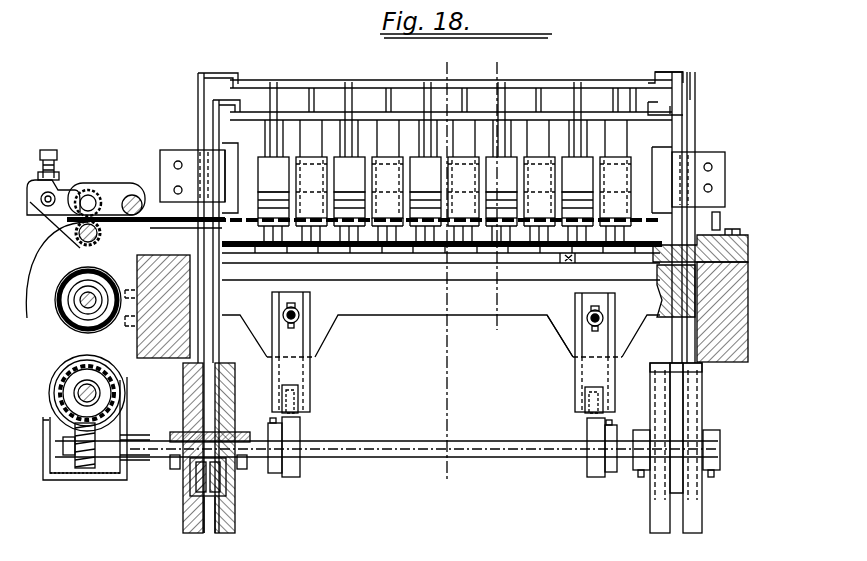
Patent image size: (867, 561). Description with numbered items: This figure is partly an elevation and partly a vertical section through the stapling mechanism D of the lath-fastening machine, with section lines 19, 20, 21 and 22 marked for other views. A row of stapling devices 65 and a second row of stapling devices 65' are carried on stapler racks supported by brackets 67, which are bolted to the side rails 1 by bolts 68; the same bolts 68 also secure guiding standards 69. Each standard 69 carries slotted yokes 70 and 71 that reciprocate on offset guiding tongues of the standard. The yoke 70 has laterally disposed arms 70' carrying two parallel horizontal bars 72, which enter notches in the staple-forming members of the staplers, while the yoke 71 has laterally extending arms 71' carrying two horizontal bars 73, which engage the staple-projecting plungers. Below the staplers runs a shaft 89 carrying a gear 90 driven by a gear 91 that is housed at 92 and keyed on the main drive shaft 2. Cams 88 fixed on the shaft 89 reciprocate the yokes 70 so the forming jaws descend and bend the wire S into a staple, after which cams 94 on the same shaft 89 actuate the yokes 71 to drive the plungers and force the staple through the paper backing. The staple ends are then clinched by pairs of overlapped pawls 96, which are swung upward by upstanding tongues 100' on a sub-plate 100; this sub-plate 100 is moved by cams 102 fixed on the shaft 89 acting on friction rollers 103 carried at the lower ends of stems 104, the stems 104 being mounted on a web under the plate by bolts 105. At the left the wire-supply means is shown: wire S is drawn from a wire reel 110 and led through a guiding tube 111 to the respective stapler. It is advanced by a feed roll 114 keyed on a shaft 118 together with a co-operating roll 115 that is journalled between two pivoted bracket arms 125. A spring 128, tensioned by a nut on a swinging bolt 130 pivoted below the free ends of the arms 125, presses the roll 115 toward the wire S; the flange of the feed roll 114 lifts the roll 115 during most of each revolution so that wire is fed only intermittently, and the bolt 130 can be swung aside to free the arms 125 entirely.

The side rail 1 is at (152, 320).
The main drive shaft 2 is at (80, 393).
The section line 19 is at (456, 66).
The section line 20 is at (602, 137).
The section line 21 is at (553, 215).
The section line 22 is at (512, 71).
The stapling device 65 is at (547, 181).
The stapling device 65' is at (494, 367).
The bracket 67 is at (716, 236).
The bolt 68 is at (741, 233).
The guiding standard 69 is at (696, 96).
The yoke 70 is at (470, 217).
The arm of yoke 70 70' is at (697, 108).
The yoke 71 is at (442, 208).
The arm of yoke 71 71' is at (682, 68).
The horizontal bar 72 is at (624, 118).
The horizontal bar 73 is at (594, 80).
The cam 88 is at (236, 525).
The shaft 89 is at (366, 440).
The gear 90 is at (82, 470).
The gear 91 is at (70, 373).
The gear housing 92 is at (72, 363).
The cam 94 is at (184, 530).
The clinching pawl 96 is at (578, 262).
The sub-plate 100 is at (441, 317).
The upstanding tongue 100' is at (542, 330).
The cam 102 is at (300, 465).
The friction roller 103 is at (299, 397).
The stem 104 is at (296, 373).
The bolt 105 is at (299, 310).
The wire reel 110 is at (64, 283).
The guiding tube 111 is at (114, 222).
The feed roll 114 is at (134, 253).
The co-operating roll 115 is at (89, 190).
The shaft 118 is at (82, 241).
The bracket arm 125 is at (114, 192).
The spring 128 is at (60, 177).
The swinging bolt 130 is at (48, 152).
The device D is at (329, 63).
The staple-forming wire S is at (390, 559).